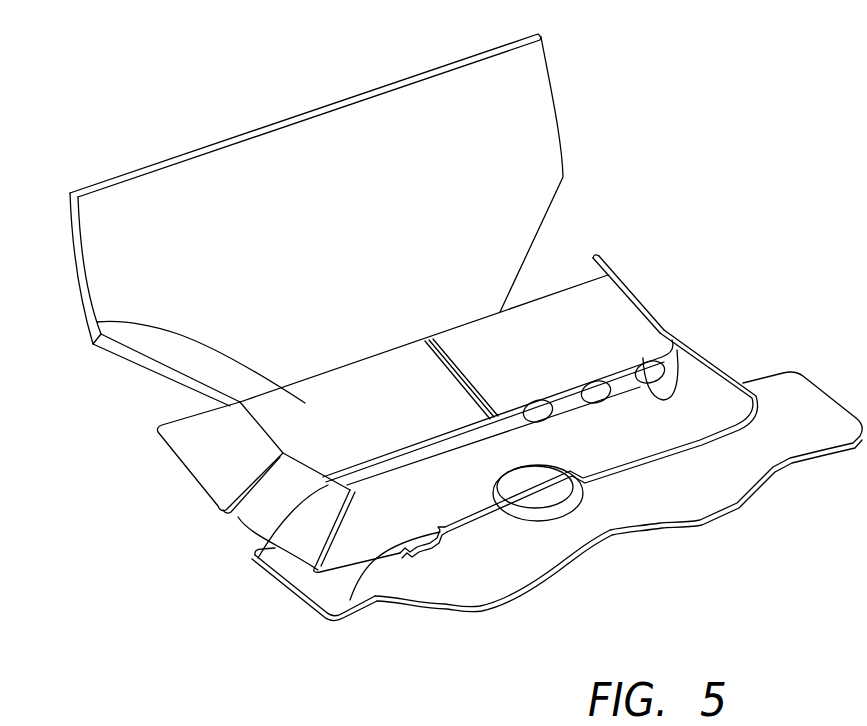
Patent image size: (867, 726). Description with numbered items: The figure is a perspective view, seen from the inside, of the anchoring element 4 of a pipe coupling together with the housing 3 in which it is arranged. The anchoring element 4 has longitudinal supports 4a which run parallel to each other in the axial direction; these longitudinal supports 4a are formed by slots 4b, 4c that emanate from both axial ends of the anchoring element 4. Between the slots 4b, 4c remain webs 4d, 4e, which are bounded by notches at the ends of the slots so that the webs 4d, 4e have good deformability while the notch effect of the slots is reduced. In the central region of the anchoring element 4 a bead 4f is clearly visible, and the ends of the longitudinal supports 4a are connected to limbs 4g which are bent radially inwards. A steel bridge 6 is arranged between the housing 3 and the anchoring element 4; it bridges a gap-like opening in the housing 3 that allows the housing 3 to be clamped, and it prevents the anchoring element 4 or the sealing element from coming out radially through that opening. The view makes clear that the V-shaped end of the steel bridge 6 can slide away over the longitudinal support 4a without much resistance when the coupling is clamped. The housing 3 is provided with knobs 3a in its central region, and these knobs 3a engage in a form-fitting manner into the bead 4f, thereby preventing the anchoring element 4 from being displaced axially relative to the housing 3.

The housing 3 is at (772, 428).
The knobs 3a is at (545, 490).
The anchoring element 4 is at (187, 470).
The longitudinal supports 4a is at (97, 322).
The slots 4b is at (253, 553).
The slots 4c is at (660, 398).
The webs 4d is at (337, 619).
The webs 4e is at (565, 400).
The bead 4f is at (490, 450).
The limbs 4g is at (202, 428).
The steel bridge 6 is at (495, 127).